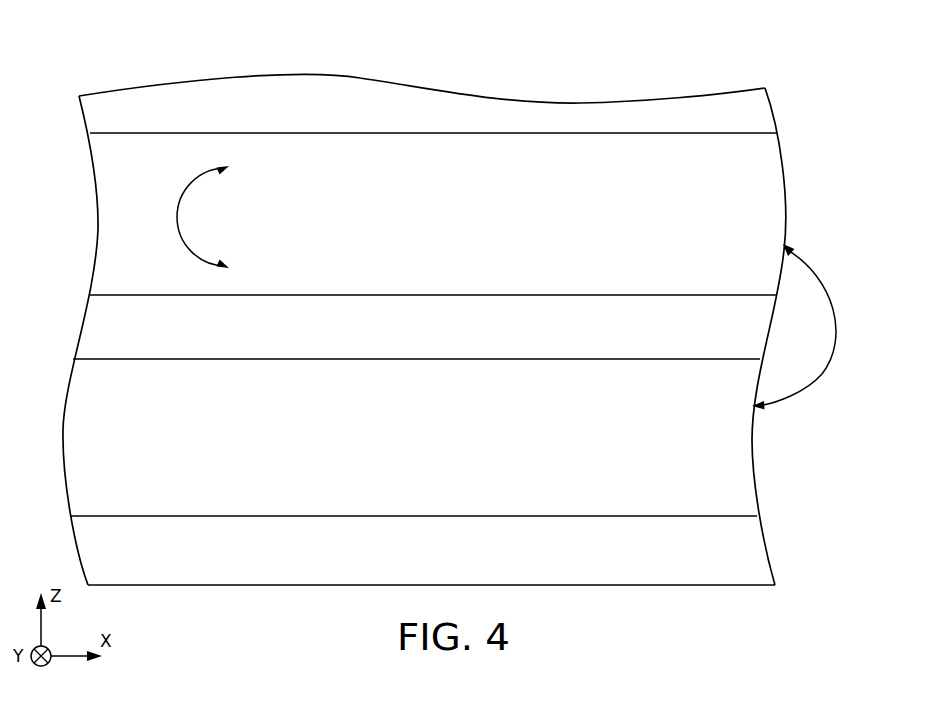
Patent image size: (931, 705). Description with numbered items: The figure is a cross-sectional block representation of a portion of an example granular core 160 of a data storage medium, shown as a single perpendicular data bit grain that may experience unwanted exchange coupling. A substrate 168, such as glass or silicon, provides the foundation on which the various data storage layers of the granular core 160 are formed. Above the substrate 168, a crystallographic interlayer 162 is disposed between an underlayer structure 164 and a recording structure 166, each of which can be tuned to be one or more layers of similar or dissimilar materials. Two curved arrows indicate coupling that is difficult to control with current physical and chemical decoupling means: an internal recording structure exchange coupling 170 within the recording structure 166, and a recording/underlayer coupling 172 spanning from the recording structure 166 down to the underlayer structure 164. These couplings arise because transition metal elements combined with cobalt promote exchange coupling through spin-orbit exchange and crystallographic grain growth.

The granular core 160 is at (112, 53).
The crystallographic interlayer 162 is at (752, 337).
The underlayer structure 164 is at (750, 449).
The recording structure 166 is at (750, 226).
The substrate 168 is at (750, 562).
The internal recording structure exchange coupling 170 is at (186, 217).
The recording/underlayer coupling 172 is at (807, 327).